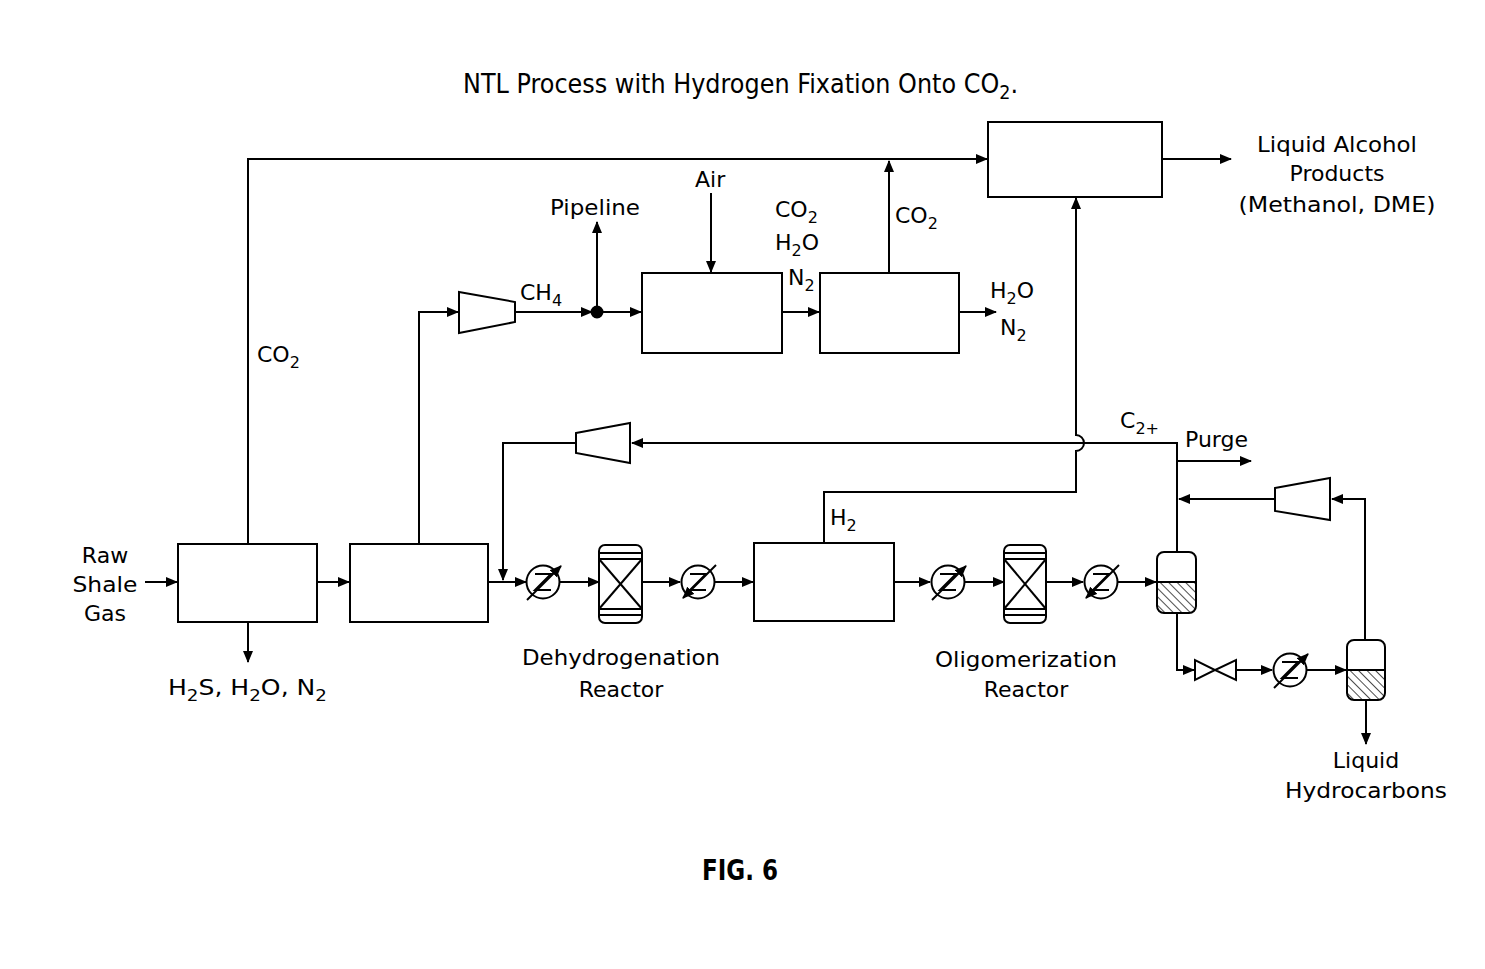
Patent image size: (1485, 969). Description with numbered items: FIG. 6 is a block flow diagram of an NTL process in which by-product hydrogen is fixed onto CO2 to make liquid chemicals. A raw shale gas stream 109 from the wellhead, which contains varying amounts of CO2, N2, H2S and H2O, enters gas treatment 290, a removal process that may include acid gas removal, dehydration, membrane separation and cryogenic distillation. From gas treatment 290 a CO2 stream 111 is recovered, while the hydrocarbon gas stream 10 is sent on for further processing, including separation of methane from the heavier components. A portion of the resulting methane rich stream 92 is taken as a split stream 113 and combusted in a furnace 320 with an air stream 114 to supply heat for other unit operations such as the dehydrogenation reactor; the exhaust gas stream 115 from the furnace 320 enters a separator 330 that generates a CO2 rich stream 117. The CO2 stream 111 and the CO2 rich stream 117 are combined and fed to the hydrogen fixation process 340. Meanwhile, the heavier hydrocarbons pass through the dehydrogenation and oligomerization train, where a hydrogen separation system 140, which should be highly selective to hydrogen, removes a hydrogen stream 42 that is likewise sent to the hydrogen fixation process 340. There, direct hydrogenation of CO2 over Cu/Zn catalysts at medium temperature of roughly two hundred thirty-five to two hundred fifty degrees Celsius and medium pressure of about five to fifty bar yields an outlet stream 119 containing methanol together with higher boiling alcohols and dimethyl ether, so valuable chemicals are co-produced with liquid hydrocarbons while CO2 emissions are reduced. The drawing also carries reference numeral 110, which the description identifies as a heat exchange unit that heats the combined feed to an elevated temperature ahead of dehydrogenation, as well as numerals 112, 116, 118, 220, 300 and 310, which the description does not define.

The hydrocarbon gas stream 10 is at (327, 577).
The hydrogen stream 42 is at (1077, 317).
The methane rich stream 92 is at (543, 314).
The raw shale gas stream 109 is at (153, 580).
The heat exchange unit 110 is at (245, 628).
The CO2 stream 111 is at (275, 158).
The pipeline methane stream 112 is at (595, 263).
The split stream 113 is at (605, 316).
The air stream 114 is at (709, 223).
The exhaust gas stream 115 is at (790, 318).
The H2O/N2 exhaust stream 116 is at (975, 318).
The CO2 rich stream 117 is at (893, 240).
The combined CO2 feed to fixation unit 118 is at (958, 162).
The outlet stream 119 is at (1185, 161).
The hydrogen separation system 140 is at (823, 622).
The methane compressor 220 is at (480, 292).
The gas treatment 290 is at (285, 543).
The CH4/C2+ separation unit 300 is at (295, 622).
The methane stream junction 310 is at (596, 318).
The furnace 320 is at (712, 353).
The separator 330 is at (889, 353).
The hydrogen fixation process 340 is at (1130, 121).